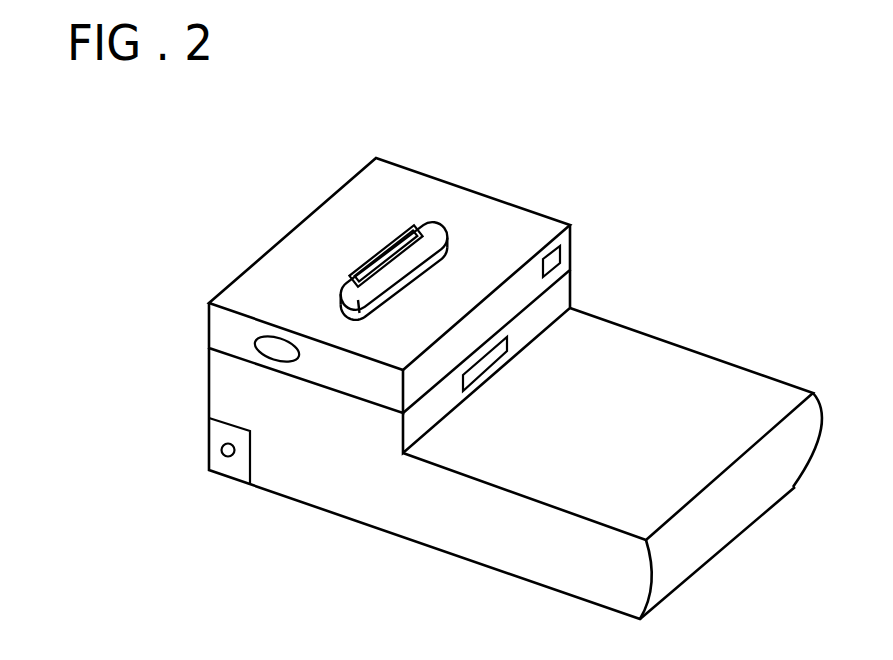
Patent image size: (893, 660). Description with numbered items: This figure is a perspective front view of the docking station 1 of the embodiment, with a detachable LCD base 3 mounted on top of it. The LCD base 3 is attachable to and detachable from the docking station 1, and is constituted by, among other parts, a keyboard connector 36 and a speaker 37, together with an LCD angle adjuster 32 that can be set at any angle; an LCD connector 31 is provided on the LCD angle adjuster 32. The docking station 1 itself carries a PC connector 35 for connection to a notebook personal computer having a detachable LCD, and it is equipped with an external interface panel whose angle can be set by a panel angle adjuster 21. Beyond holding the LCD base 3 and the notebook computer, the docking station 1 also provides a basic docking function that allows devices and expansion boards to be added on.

The docking station 1 is at (638, 357).
The LCD base 3 is at (515, 220).
The panel angle adjuster 21 is at (222, 457).
The LCD connector 31 is at (373, 267).
The LCD angle adjuster 32 is at (427, 220).
The PC connector 35 is at (505, 358).
The keyboard connector 36 is at (562, 255).
The speaker 37 is at (255, 339).